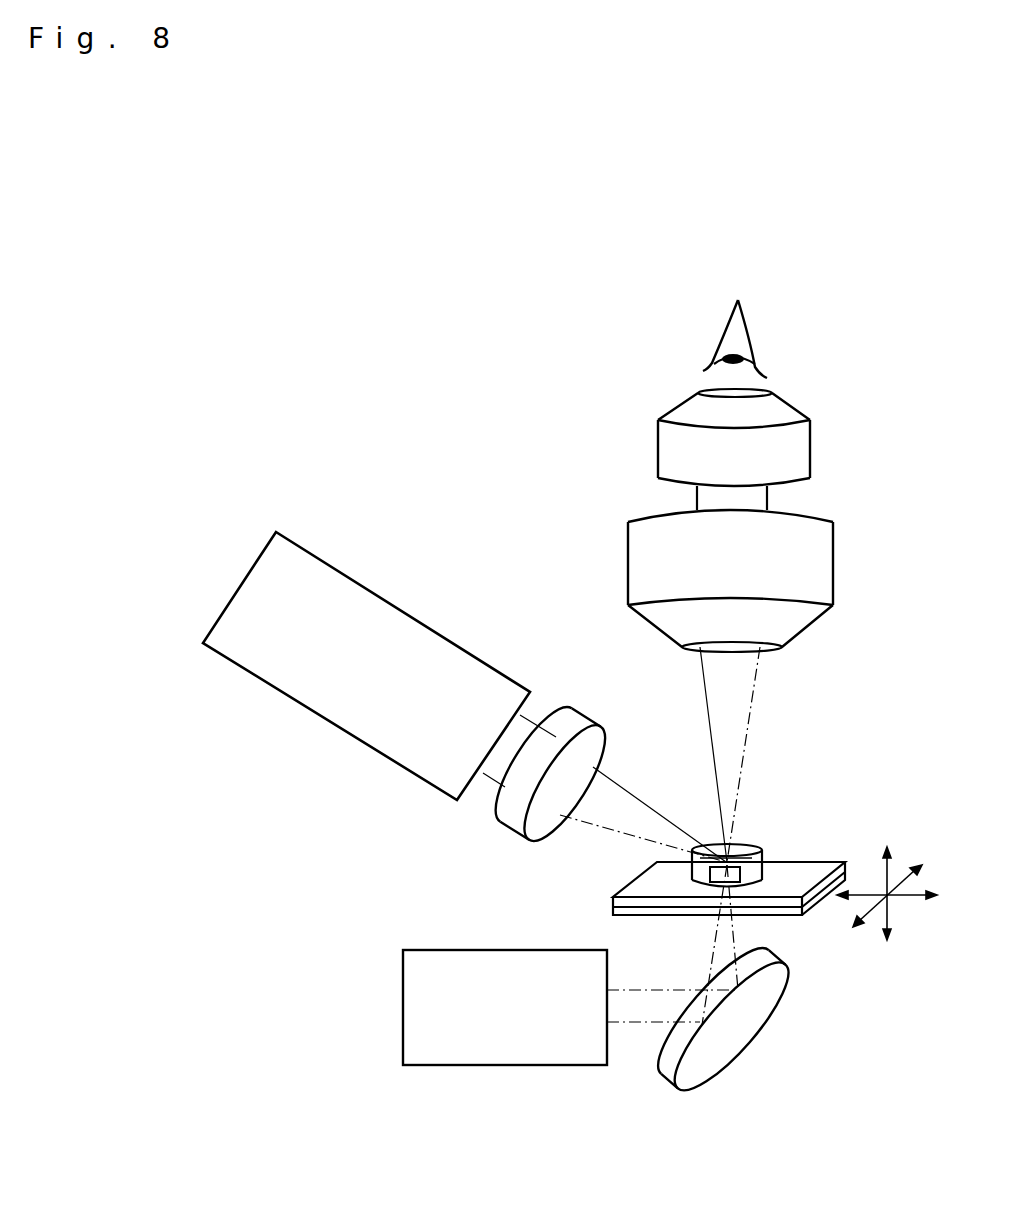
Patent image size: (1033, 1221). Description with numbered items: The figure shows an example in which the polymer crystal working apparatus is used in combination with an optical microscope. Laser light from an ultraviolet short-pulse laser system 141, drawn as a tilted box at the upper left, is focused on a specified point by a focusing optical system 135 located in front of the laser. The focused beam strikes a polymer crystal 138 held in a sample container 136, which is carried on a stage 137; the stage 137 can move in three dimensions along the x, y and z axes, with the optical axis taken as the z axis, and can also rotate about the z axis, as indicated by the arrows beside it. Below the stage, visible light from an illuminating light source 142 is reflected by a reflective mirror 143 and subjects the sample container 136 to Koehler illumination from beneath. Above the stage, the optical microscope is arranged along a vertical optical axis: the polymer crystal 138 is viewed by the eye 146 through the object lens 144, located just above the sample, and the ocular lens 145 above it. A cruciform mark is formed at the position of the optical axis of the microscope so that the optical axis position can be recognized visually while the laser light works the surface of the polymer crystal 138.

The focusing optical system 135 is at (585, 725).
The sample container 136 is at (692, 873).
The stage 137 is at (782, 862).
The polymer crystal 138 is at (733, 852).
The ultraviolet short-pulse laser system 141 is at (423, 617).
The illuminating light source 142 is at (403, 1007).
The reflective mirror 143 is at (760, 1012).
The object lens 144 is at (833, 562).
The ocular lens 145 is at (810, 457).
The eye 146 is at (753, 337).